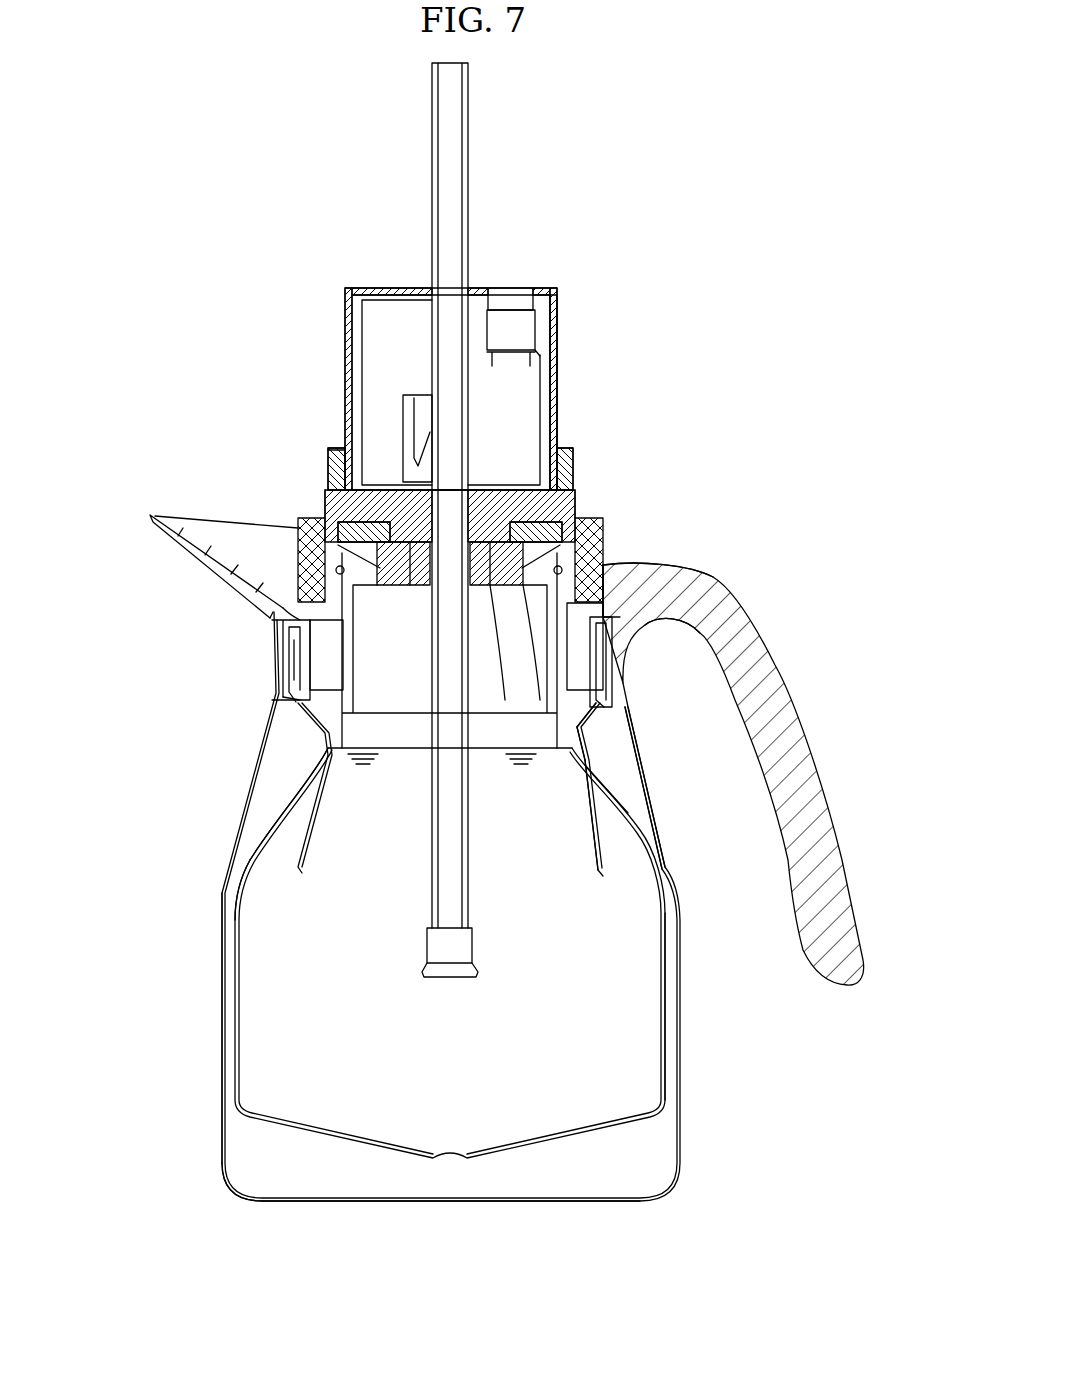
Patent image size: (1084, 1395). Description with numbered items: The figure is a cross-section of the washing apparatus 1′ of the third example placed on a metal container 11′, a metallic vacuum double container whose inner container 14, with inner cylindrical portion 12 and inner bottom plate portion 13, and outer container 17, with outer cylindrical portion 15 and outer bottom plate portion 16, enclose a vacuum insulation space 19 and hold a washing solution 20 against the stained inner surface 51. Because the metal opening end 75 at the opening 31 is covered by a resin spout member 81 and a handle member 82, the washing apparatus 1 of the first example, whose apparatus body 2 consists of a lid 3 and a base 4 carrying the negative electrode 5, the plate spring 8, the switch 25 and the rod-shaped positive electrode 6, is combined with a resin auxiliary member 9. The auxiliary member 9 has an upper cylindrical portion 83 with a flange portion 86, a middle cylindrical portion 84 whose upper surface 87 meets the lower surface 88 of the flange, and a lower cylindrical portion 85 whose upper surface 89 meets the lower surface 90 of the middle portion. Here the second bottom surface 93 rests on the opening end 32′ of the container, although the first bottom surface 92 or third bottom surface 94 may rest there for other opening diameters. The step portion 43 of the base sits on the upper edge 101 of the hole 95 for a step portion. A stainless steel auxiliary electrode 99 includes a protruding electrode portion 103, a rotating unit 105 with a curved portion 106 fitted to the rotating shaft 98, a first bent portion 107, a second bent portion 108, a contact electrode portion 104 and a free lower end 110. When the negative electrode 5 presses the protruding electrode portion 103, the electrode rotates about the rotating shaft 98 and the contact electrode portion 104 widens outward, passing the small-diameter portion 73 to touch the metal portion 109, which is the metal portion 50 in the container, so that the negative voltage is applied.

The positive electrode 6 is at (468, 88).
The washing apparatus 1 is at (566, 285).
The washing apparatus 1′ is at (305, 265).
The apparatus body 2 is at (565, 352).
The lid 3 is at (560, 318).
The switch 25 is at (512, 290).
The plate spring 8 is at (408, 425).
The base 4 is at (575, 478).
The step portion 43 is at (375, 530).
The negative electrode 5 is at (322, 543).
The upper edge 101 is at (380, 580).
The rotating unit 105 is at (525, 575).
The protruding electrode portion 103 is at (338, 527).
The first bent portion 107 is at (568, 540).
The flange portion 86 is at (566, 550).
The curved portion 106 is at (604, 562).
The auxiliary member 9 is at (624, 541).
The rotating shaft 98 is at (320, 572).
The metal opening end 75 is at (330, 665).
The lower cylindrical portion 85 is at (620, 670).
The first bottom surface 92 is at (318, 608).
The opening end of the container 32′ is at (300, 622).
The second bottom surface 93 is at (305, 656).
The upper surface 89 is at (627, 642).
The small-diameter portion 73 is at (600, 727).
The spout member 81 is at (183, 545).
The lower surface 88 is at (300, 525).
The upper surface 87 is at (313, 550).
The inner container 14 is at (300, 760).
The outer cylindrical portion 15 is at (665, 820).
The vacuum insulation space 19 is at (655, 828).
The inner surface 51 is at (235, 905).
The outer bottom plate portion 16 is at (556, 1205).
The metal container 11′ is at (692, 1050).
The inner bottom plate portion 13 is at (520, 1145).
The inner cylindrical portion 12 is at (620, 790).
The washing solution 20 is at (598, 948).
The outer container 17 is at (320, 775).
The opening 31 is at (300, 720).
The third bottom surface 94 is at (285, 700).
The metal portion in the container 50 is at (310, 800).
The lower end 110 is at (640, 875).
The auxiliary electrode 99 is at (645, 840).
The metal portion in the container 109 is at (605, 740).
The contact electrode portion 104 is at (600, 830).
The hole for a step portion 95 is at (520, 592).
The second bent portion 108 is at (540, 592).
The handle member 82 is at (700, 566).
The upper cylindrical portion 83 is at (612, 580).
The middle cylindrical portion 84 is at (660, 578).
The lower surface 90 is at (663, 618).